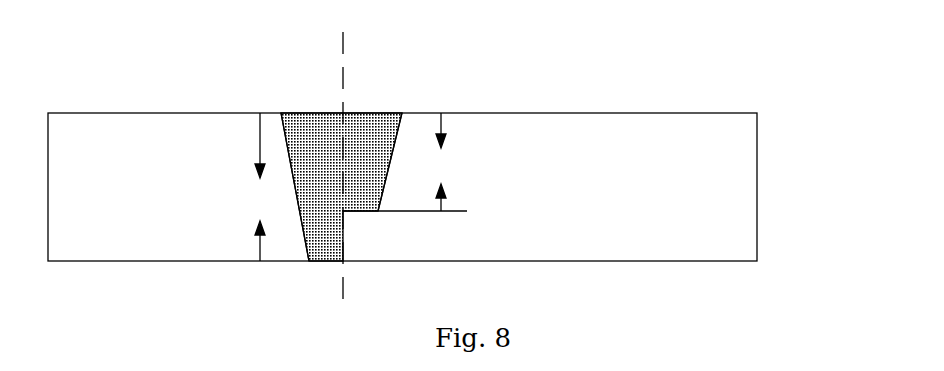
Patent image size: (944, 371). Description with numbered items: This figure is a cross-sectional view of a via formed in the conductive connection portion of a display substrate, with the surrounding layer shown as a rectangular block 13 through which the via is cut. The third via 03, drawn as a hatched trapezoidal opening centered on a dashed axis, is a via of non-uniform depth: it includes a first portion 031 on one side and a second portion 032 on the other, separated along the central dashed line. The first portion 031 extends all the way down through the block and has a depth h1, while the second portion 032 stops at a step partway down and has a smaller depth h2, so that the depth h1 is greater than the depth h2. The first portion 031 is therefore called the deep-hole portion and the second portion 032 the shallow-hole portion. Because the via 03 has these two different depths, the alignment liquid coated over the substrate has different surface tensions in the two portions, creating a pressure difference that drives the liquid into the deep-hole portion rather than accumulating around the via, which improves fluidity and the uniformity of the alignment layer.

The third via 03 is at (379, 96).
The first portion 031 is at (307, 187).
The second portion 032 is at (377, 162).
The substrate 13 is at (687, 178).
The depth of the first portion h1 is at (255, 187).
The depth of the second portion h2 is at (449, 162).